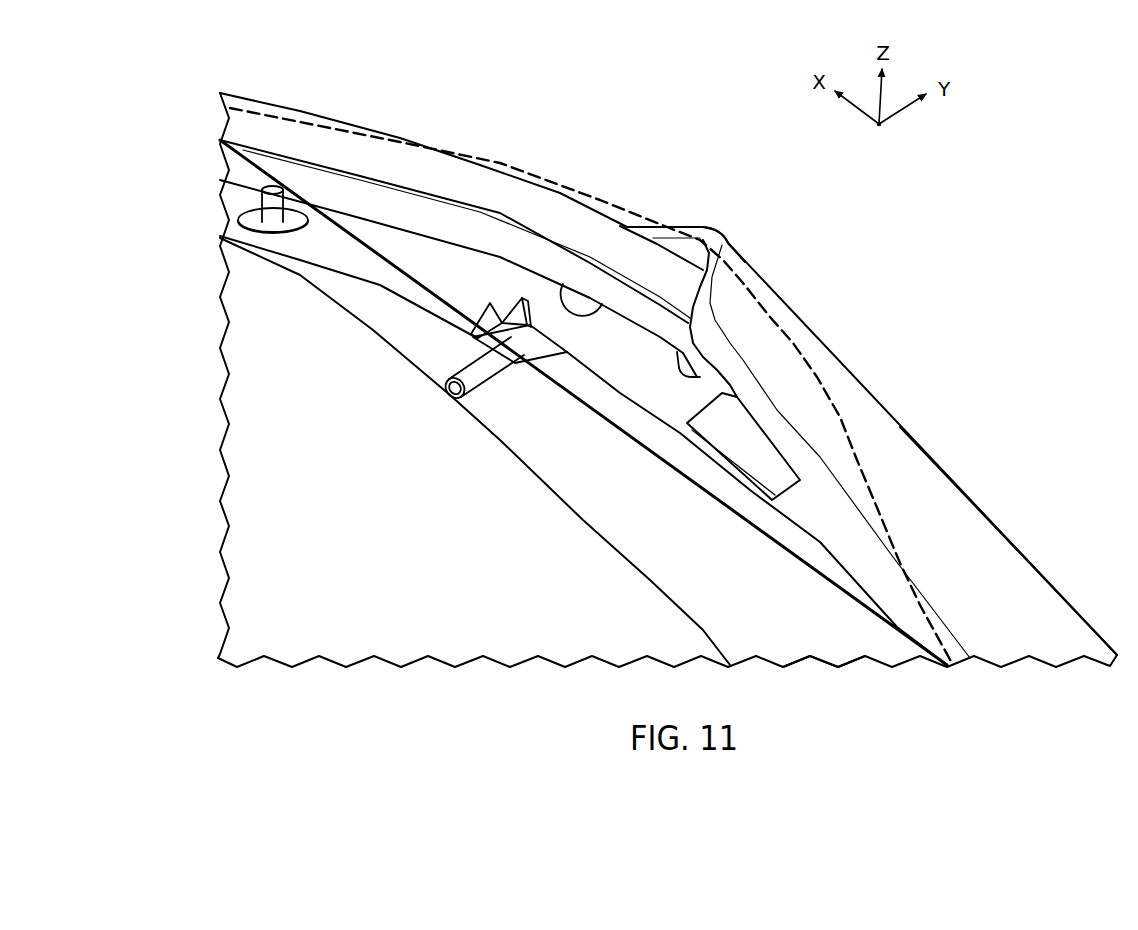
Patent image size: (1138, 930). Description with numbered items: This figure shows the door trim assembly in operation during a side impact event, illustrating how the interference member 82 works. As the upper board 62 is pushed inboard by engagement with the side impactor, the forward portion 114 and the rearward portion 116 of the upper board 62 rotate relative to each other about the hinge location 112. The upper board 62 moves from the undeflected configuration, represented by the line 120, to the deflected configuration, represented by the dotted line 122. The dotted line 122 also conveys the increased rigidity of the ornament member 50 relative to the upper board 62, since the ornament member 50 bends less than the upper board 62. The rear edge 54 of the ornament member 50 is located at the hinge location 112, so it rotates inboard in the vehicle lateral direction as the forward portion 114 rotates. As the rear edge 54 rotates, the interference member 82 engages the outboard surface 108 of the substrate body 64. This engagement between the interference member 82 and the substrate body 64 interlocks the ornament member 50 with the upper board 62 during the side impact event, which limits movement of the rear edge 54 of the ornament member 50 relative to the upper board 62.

The ornament member 50 is at (667, 348).
The forward portion 114 is at (668, 332).
The dotted line (deflected configuration) 122 is at (457, 153).
The rear edge 54 is at (620, 247).
The hinge location 112 is at (710, 202).
The line (undeflected configuration) 120 is at (805, 560).
The outboard surface 108 is at (638, 369).
The interference member 82 is at (743, 421).
The rearward portion 116 is at (1008, 519).
The upper board 62 is at (662, 451).
The substrate body 64 is at (822, 653).